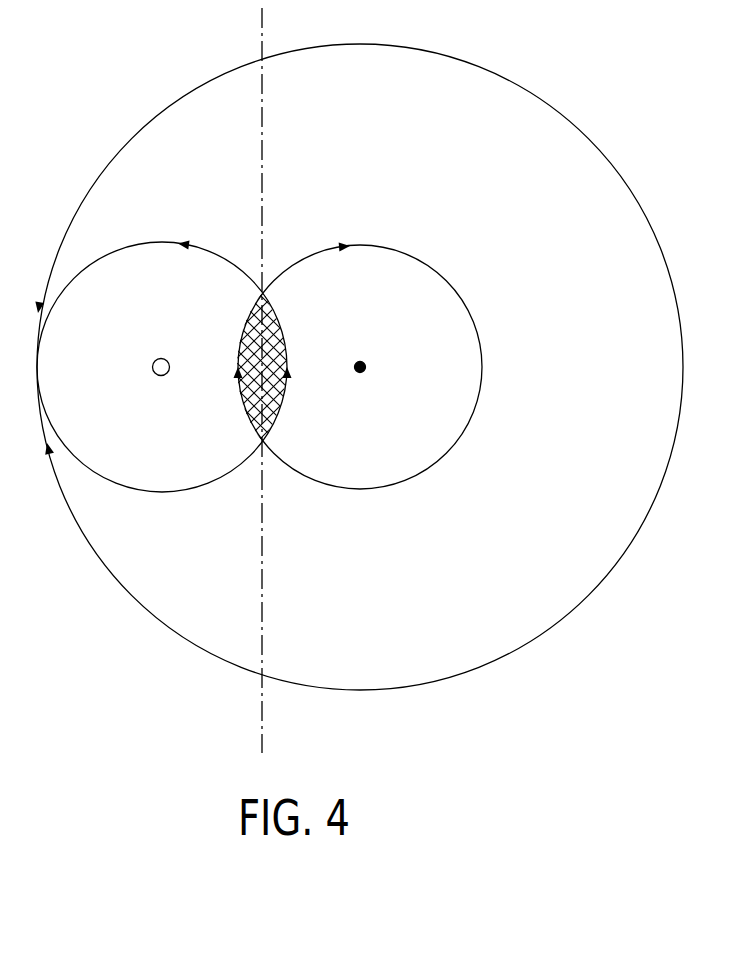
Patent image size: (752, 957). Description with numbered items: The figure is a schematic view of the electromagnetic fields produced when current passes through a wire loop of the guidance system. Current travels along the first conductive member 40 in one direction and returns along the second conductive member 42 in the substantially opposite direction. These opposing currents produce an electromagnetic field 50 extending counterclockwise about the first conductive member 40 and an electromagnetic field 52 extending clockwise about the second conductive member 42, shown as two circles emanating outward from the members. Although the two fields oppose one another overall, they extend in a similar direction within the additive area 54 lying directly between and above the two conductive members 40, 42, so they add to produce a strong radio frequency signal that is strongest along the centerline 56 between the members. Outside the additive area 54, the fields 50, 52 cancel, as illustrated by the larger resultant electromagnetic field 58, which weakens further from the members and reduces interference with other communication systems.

The first conductive member 40 is at (161, 376).
The second conductive member 42 is at (361, 362).
The electromagnetic field 50 is at (222, 257).
The electromagnetic field 52 is at (473, 322).
The additive area 54 is at (283, 396).
The centerline 56 is at (261, 690).
The resultant electromagnetic field 58 is at (405, 688).